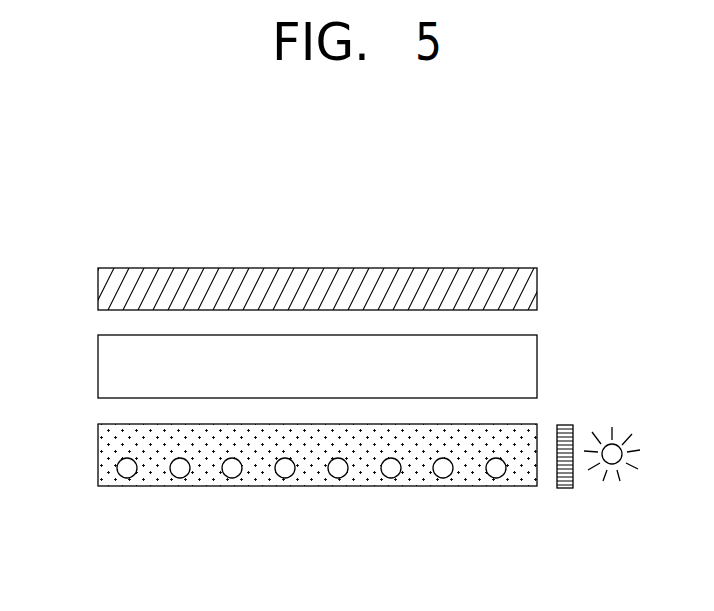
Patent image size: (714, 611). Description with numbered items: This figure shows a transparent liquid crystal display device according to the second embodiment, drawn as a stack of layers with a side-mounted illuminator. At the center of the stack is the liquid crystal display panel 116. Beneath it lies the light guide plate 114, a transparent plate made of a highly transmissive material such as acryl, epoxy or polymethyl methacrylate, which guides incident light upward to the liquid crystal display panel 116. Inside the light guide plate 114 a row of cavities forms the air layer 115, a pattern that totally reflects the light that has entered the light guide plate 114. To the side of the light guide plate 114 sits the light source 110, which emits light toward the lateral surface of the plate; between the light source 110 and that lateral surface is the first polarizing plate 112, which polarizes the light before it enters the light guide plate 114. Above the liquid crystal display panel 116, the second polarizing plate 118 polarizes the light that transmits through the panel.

The light source 110 is at (612, 466).
The first polarizing plate 112 is at (565, 481).
The light guide plate 114 is at (98, 451).
The air layer 115 is at (127, 472).
The liquid crystal display panel 116 is at (98, 364).
The second polarizing plate 118 is at (98, 287).